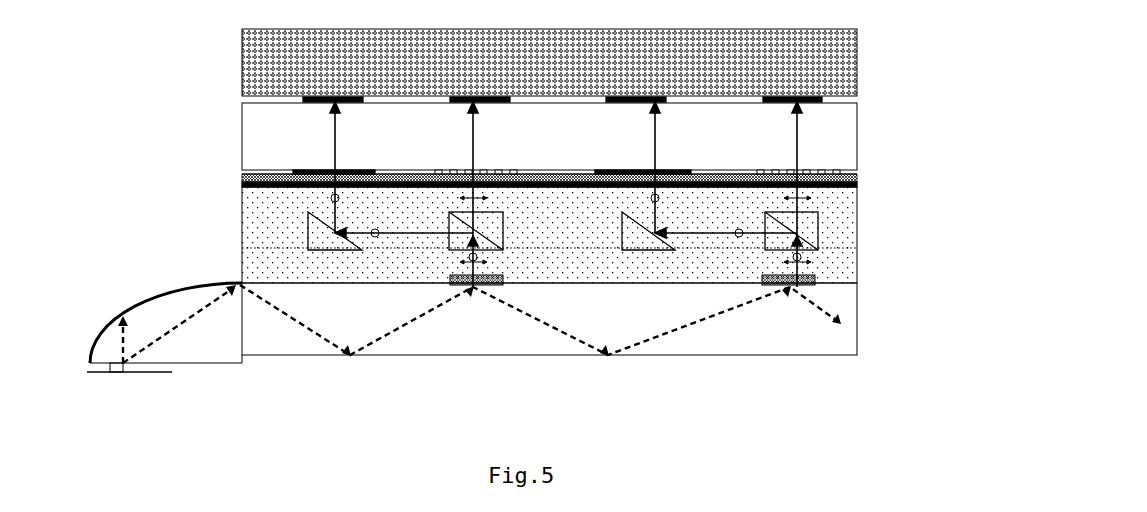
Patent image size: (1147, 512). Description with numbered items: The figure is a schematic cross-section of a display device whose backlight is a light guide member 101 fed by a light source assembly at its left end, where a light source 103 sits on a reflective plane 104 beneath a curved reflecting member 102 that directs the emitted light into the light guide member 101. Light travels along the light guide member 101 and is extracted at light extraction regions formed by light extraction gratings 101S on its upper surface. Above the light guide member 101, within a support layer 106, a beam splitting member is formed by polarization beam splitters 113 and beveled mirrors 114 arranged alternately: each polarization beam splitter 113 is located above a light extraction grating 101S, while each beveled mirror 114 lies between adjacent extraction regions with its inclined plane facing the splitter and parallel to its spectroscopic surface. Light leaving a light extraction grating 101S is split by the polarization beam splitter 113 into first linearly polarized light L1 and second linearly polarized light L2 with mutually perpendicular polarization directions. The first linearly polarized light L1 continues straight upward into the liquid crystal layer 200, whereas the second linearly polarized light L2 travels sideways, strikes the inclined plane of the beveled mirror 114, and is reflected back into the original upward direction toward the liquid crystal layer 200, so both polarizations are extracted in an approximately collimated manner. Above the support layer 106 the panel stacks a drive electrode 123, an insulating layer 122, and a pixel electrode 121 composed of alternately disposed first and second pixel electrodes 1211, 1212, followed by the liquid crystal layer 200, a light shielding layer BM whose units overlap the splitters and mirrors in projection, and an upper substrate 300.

The upper substrate 300 is at (857, 63).
The light shielding layer BM is at (822, 100).
The liquid crystal layer 200 is at (857, 120).
The pixel electrode 121 is at (596, 153).
The first pixel electrode 1211 is at (633, 163).
The second pixel electrode 1212 is at (492, 163).
The insulating layer 122 is at (857, 178).
The drive electrode 123 is at (857, 184).
The support layer 106 is at (857, 265).
The light guide member 101 is at (857, 340).
The light extraction grating 101S is at (820, 282).
The polarization beam splitter 113 is at (633, 226).
The beveled mirror 114 is at (491, 223).
The first linearly polarized light L1 is at (635, 194).
The second linearly polarized light L2 is at (563, 170).
The curved reflecting member 102 is at (148, 300).
The light source 103 is at (120, 373).
The reflective plane 104 is at (170, 373).